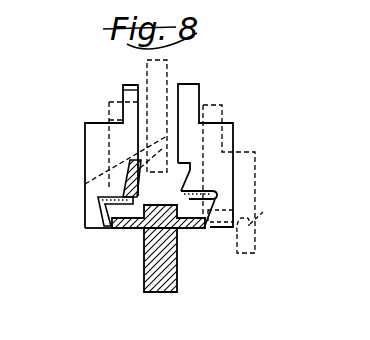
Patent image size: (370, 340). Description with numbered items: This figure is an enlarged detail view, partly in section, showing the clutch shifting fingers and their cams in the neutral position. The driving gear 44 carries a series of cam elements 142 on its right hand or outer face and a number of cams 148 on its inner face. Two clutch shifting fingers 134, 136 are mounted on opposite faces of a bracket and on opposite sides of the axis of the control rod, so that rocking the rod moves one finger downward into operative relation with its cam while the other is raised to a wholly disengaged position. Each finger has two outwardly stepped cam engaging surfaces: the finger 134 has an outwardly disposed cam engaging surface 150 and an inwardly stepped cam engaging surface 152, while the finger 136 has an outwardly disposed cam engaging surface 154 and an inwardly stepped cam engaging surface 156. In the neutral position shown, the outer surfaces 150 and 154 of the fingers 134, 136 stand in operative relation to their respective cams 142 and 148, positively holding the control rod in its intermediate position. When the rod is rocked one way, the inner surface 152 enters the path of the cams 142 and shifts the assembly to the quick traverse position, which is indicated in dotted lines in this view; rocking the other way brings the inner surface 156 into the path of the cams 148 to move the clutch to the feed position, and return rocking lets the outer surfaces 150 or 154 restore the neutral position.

The gear 44 is at (144, 281).
The clutch shifting finger 134 is at (224, 147).
The clutch shifting finger 136 is at (85, 126).
The cam element 142 is at (203, 228).
The cam 148 is at (120, 229).
The outwardly disposed cam engaging surface 150 is at (232, 210).
The inwardly stepped cam engaging surface 152 is at (181, 180).
The outwardly disposed cam engaging surface 154 is at (103, 213).
The inwardly stepped cam engaging surface 156 is at (86, 184).